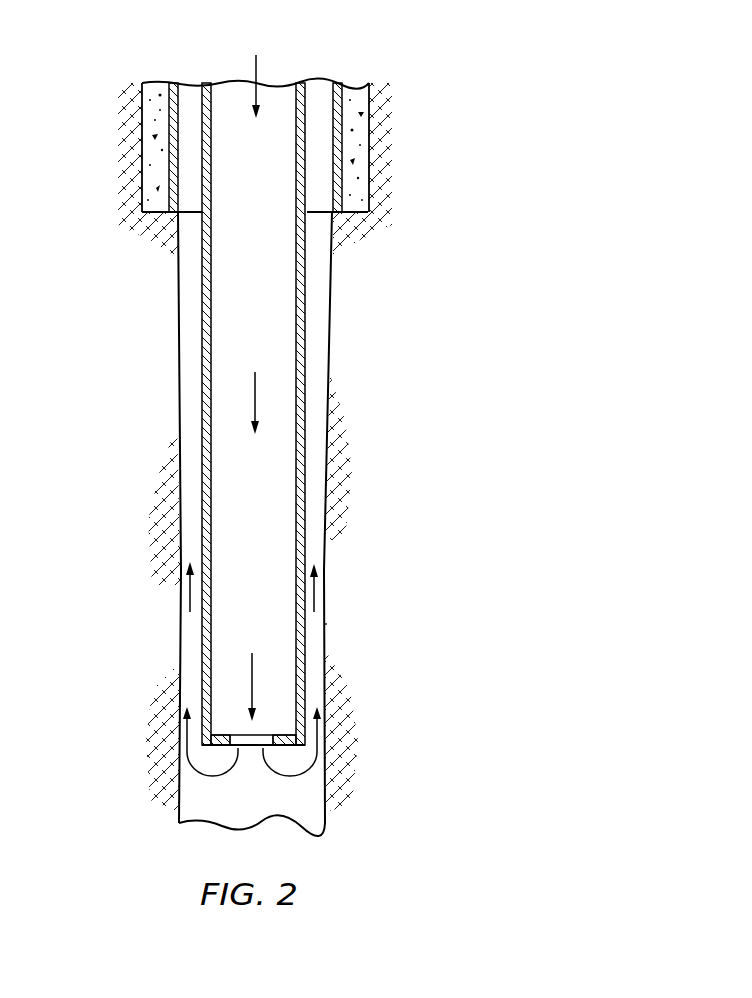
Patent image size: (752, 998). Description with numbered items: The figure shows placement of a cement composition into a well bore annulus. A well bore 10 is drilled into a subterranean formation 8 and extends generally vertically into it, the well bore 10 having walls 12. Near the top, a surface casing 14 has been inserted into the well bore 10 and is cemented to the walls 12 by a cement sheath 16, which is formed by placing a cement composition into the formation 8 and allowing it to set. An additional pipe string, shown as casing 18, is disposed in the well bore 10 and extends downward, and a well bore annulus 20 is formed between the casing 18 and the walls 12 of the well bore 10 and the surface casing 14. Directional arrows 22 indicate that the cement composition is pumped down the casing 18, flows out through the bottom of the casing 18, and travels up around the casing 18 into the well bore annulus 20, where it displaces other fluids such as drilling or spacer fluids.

The subterranean formation 8 is at (138, 497).
The well bore 10 is at (332, 623).
The walls 12 is at (178, 392).
The surface casing 14 is at (168, 125).
The cement sheath 16 is at (145, 142).
The casing 18 is at (203, 350).
The well bore annulus 20 is at (193, 427).
The directional arrows 22 is at (258, 70).